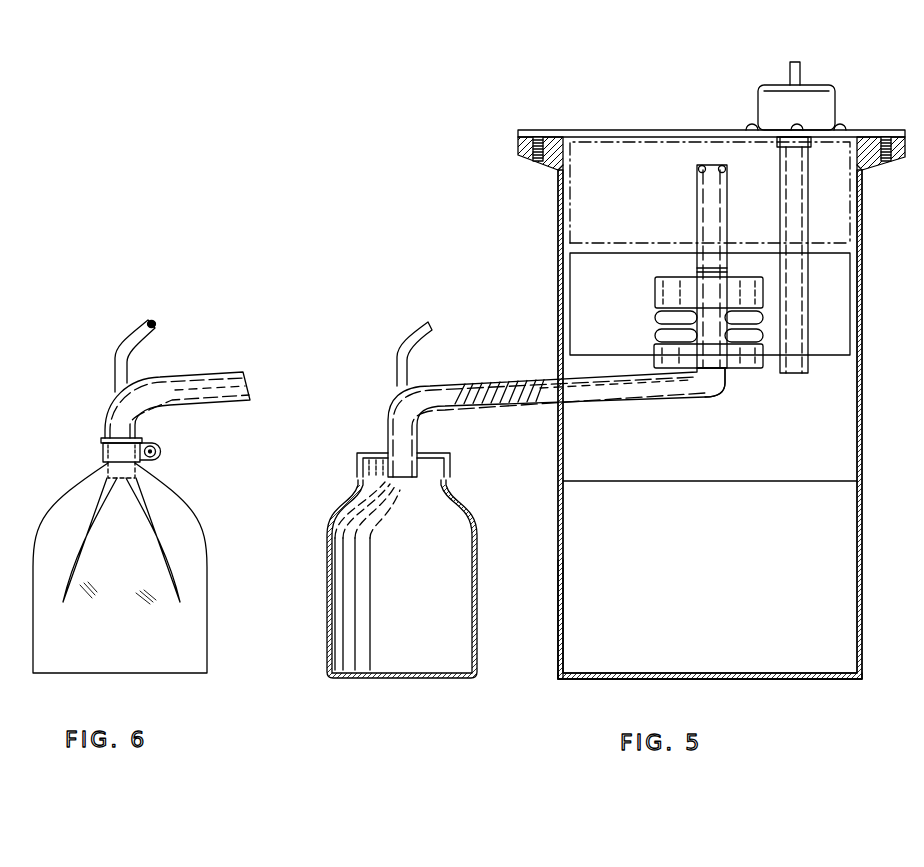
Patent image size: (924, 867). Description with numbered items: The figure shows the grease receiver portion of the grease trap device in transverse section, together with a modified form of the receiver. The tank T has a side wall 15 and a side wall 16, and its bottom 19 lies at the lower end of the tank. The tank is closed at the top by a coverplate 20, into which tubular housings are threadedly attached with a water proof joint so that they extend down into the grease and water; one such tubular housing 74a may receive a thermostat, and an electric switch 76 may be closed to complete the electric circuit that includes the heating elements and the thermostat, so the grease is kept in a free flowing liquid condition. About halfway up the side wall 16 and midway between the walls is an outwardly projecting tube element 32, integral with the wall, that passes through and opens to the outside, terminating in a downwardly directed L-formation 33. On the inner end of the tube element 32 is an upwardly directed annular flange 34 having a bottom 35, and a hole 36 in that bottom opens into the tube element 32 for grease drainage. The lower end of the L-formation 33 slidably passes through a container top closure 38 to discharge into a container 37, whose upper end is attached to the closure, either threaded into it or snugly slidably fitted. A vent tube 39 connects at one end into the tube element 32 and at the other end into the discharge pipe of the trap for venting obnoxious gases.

In FIG. 5, the side wall 15 is at (862, 630).
In FIG. 5, the side wall 16 is at (558, 625).
In FIG. 5, the bottom 19 is at (782, 680).
In FIG. 5, the coverplate 20 is at (846, 130).
In FIG. 5, the electric switch 76 is at (798, 62).
In FIG. 5, the tubular housing 74a is at (780, 207).
In FIG. 5, the annular flange 34 is at (718, 347).
In FIG. 5, the bottom 35 is at (745, 368).
In FIG. 5, the hole 36 is at (724, 380).
In FIG. 5, the tube element 32 is at (547, 404).
In FIG. 6, the tube element 32 is at (217, 405).
In FIG. 5, the vent tube 39 is at (411, 341).
In FIG. 6, the vent tube 39 is at (122, 345).
In FIG. 5, the container top closure 38 is at (428, 452).
In FIG. 5, the container 37 is at (477, 567).
In FIG. 5, the L-formation 33 is at (387, 501).
In FIG. 6, the L-formation 33 is at (78, 498).